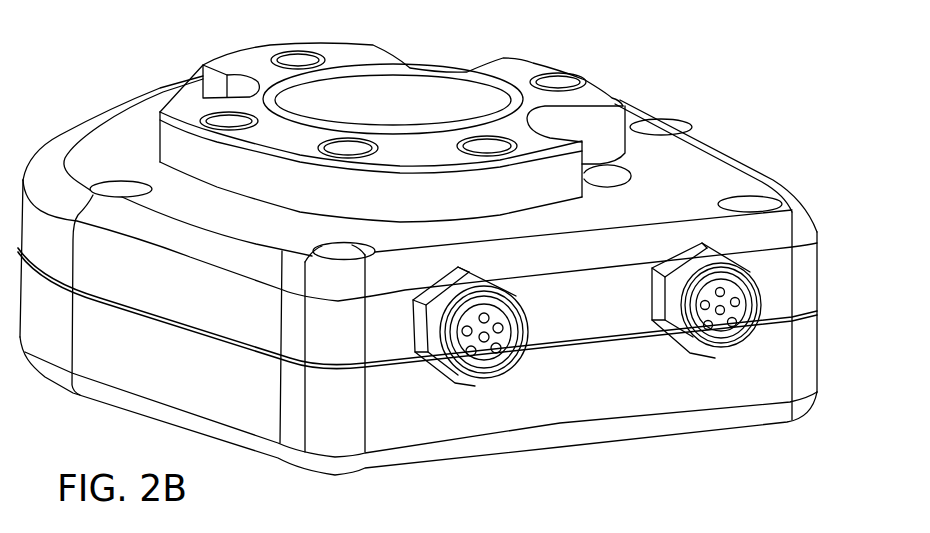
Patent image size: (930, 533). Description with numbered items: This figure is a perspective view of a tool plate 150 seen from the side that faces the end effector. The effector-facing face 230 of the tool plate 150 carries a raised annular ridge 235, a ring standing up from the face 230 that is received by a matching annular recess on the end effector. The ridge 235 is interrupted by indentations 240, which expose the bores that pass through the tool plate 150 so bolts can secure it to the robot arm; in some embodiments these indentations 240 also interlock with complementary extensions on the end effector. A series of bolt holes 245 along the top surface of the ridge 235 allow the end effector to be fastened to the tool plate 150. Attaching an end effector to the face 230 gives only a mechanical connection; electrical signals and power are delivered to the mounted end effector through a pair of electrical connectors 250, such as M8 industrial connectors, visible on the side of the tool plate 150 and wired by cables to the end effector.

The tool plate 150 is at (690, 460).
The effector-facing face 230 is at (130, 112).
The raised annular ridge 235 is at (507, 68).
The indentations 240 is at (565, 121).
The bolt holes 245 is at (294, 58).
The electrical connector 250 is at (485, 355).